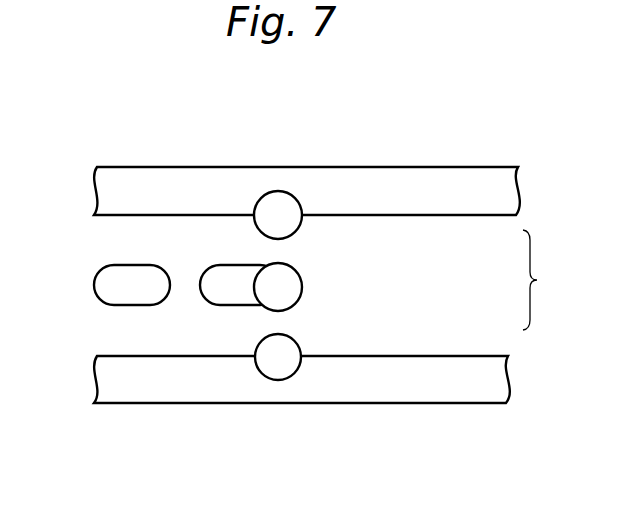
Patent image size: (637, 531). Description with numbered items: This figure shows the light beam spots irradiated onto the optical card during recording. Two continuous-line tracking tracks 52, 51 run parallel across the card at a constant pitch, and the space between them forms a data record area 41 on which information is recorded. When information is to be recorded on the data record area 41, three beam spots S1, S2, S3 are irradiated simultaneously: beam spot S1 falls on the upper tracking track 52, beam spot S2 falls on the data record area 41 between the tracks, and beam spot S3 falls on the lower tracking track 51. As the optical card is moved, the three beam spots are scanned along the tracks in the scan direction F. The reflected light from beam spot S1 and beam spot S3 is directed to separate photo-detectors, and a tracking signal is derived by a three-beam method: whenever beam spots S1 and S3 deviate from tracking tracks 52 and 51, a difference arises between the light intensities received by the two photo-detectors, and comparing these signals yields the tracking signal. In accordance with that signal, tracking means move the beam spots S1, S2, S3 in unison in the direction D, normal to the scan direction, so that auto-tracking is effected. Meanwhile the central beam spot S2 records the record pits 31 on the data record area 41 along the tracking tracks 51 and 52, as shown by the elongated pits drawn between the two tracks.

The tracking track 52 is at (93, 197).
The tracking track 51 is at (93, 388).
The record pits 31 is at (135, 306).
The beam spot S1 is at (297, 230).
The beam spot S2 is at (302, 288).
The beam spot S3 is at (300, 342).
The data record area 41 is at (542, 280).
The direction normal to scan direction D is at (442, 247).
The scan direction F is at (255, 138).